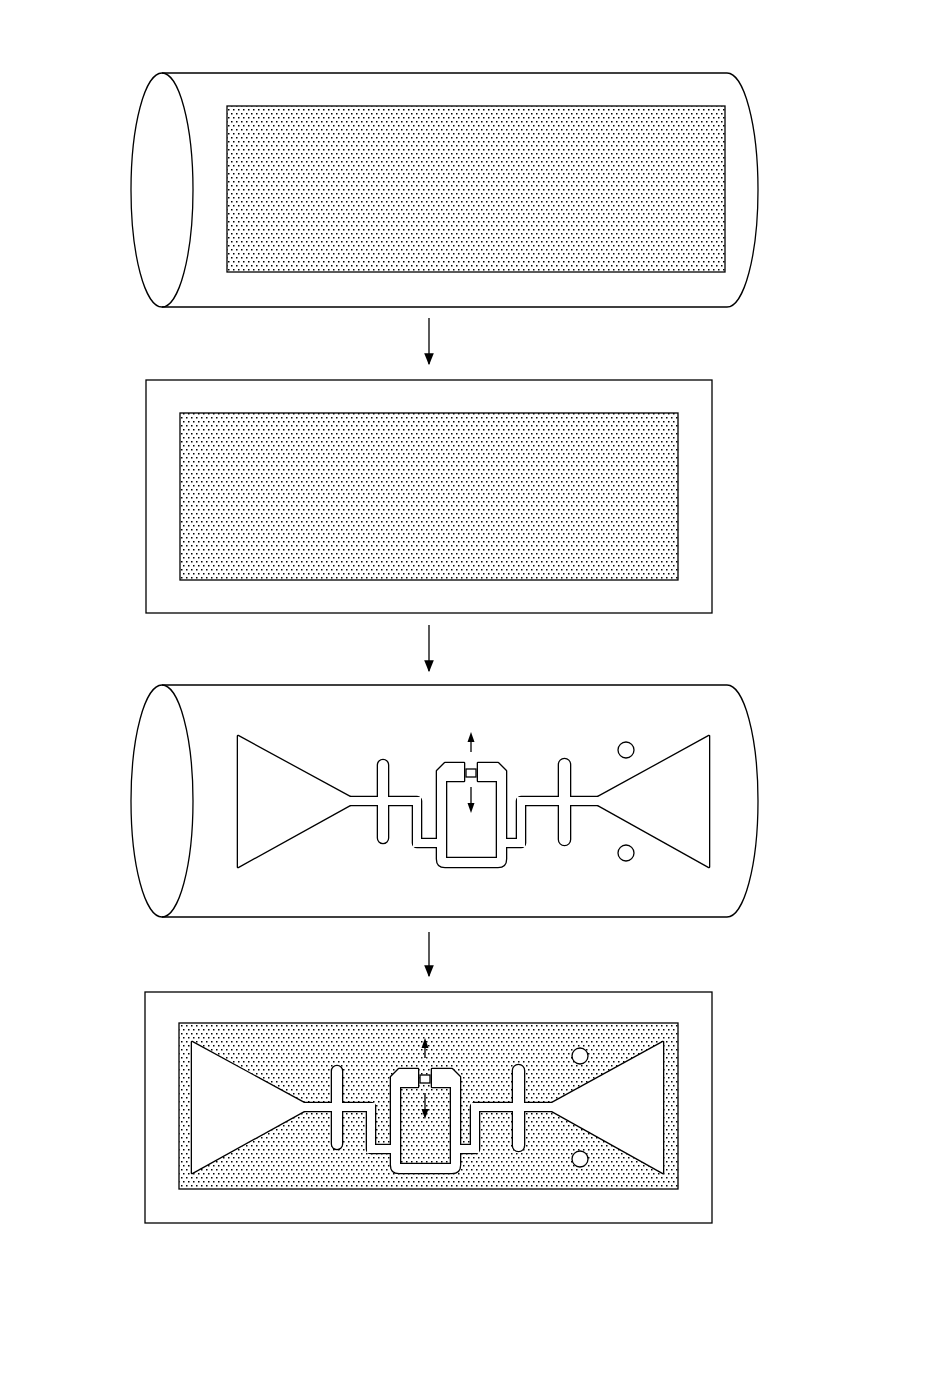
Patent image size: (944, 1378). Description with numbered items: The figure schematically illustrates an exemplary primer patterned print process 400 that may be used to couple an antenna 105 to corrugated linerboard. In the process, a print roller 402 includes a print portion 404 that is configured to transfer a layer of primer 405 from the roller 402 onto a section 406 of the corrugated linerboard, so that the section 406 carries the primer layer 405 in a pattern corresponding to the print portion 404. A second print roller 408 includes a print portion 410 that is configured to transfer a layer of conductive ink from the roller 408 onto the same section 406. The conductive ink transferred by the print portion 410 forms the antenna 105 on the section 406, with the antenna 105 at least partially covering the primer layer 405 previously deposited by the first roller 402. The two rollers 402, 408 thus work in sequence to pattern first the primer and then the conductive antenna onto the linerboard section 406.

The primer patterned print process 400 is at (114, 41).
The print roller 402 is at (772, 152).
The print portion 404 is at (741, 208).
The layer of primer 405 is at (664, 483).
The section of corrugated linerboard 406 is at (696, 441).
The second print roller 408 is at (154, 802).
The print portion 410 is at (209, 819).
The antenna 105 is at (603, 1127).